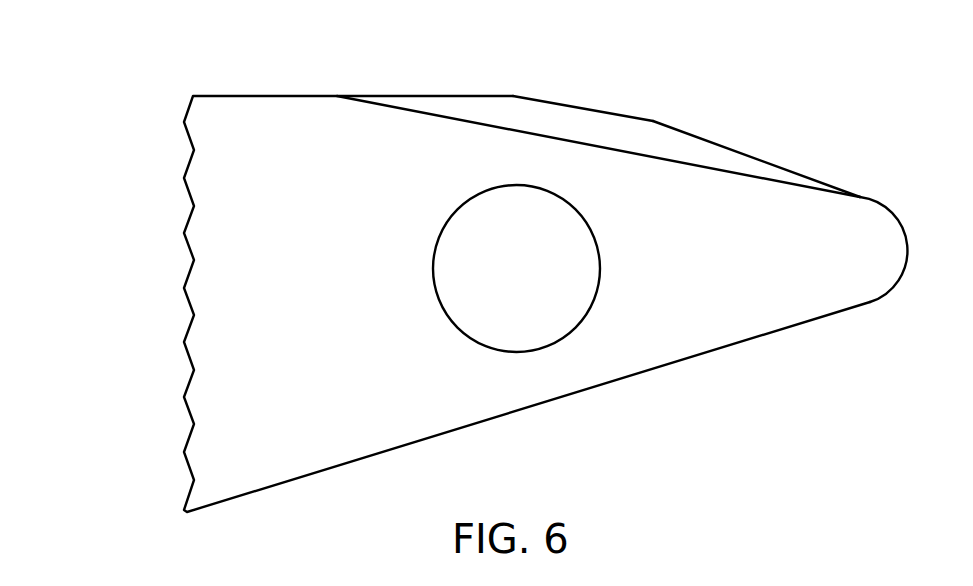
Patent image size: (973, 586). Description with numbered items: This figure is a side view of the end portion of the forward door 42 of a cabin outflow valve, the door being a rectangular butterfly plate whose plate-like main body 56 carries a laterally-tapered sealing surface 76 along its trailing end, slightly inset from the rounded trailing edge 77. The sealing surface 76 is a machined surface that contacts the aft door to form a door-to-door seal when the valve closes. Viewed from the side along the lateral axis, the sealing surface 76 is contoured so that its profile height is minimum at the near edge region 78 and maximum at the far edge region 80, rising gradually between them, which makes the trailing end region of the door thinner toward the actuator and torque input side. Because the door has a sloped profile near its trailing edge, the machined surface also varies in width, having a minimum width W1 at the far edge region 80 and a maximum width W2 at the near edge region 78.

The forward door 42 is at (177, 104).
The main body 56 is at (328, 270).
The first sealing surface 76 is at (588, 136).
The trailing edge 77 is at (907, 252).
The near edge region 78 is at (770, 178).
The far edge region 80 is at (655, 121).
The minimum width W1 is at (517, 63).
The maximum width W2 is at (330, 100).